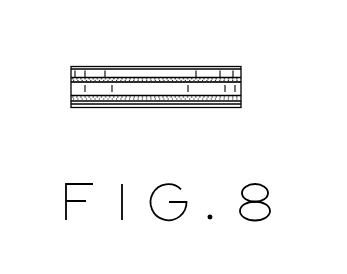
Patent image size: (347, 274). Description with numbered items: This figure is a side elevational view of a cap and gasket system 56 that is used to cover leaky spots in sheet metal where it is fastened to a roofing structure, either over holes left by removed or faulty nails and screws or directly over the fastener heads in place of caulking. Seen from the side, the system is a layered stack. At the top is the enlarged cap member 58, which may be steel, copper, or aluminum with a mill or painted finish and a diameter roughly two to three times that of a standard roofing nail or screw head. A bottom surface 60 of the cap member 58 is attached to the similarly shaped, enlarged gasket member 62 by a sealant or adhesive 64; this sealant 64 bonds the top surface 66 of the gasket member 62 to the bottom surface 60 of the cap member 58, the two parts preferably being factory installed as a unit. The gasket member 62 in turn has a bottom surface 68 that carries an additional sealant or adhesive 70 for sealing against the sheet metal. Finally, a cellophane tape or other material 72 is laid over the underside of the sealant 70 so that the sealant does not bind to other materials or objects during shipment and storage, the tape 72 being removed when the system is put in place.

The cap and gasket system 56 is at (264, 82).
The cap member 58 is at (205, 68).
The bottom surface 60 is at (93, 82).
The gasket member 62 is at (124, 97).
The sealant or adhesive 64 is at (234, 84).
The top surface 66 is at (138, 87).
The bottom surface 68 is at (222, 103).
The sealant or adhesive 70 is at (188, 98).
The cellophane tape 72 is at (168, 98).